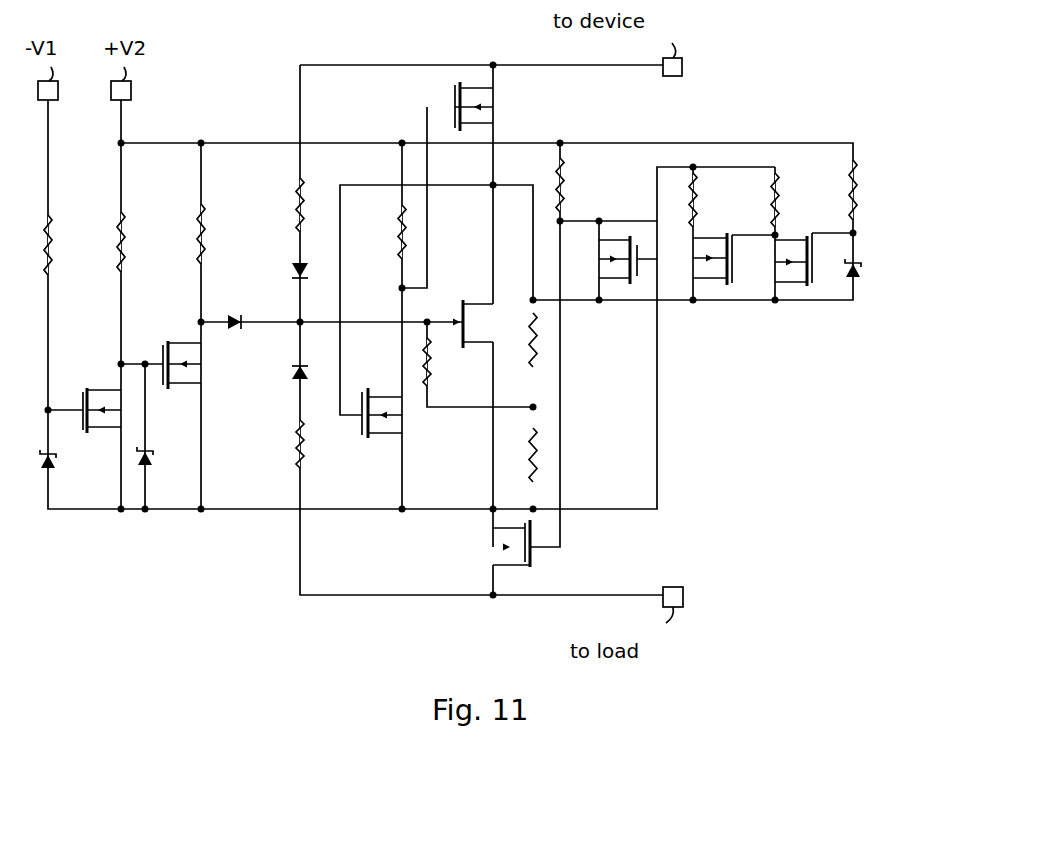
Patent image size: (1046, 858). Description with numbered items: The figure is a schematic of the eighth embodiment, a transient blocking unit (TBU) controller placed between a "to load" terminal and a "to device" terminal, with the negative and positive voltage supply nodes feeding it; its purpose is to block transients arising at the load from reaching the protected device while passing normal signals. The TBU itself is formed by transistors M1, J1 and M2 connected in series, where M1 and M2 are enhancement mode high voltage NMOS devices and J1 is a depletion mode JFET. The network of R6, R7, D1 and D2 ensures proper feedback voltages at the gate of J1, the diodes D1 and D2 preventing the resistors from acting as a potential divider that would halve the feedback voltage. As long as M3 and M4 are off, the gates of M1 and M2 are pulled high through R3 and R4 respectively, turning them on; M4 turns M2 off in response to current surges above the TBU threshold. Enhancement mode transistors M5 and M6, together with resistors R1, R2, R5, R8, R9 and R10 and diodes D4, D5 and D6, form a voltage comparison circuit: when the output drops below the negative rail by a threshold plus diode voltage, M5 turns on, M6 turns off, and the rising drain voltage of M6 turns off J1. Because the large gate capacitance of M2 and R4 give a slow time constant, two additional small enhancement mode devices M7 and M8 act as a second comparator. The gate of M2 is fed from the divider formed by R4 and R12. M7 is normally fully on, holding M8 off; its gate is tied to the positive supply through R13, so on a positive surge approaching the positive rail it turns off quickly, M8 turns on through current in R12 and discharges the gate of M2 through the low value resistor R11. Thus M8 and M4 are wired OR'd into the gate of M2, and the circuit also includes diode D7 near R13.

The resistor R1 is at (528, 347).
The resistor R2 is at (528, 467).
The resistor R3 is at (396, 239).
The resistor R4 is at (557, 192).
The resistor R5 is at (431, 364).
The resistor R6 is at (303, 196).
The resistor R7 is at (293, 445).
The resistor R8 is at (55, 236).
The resistor R9 is at (127, 233).
The resistor R10 is at (206, 230).
The resistor R11 is at (698, 194).
The resistor R12 is at (781, 201).
The resistor R13 is at (858, 190).
The diode D1 is at (290, 271).
The diode D2 is at (292, 371).
The diode D4 is at (53, 466).
The diode D5 is at (150, 463).
The diode D6 is at (238, 314).
The zener diode D7 is at (862, 277).
The HV NMOS transistor M1 is at (455, 85).
The NMOS transistor M2 is at (538, 568).
The transistor M3 is at (362, 439).
The transistor M4 is at (631, 237).
The enhancement mode NMOS transistor M5 is at (87, 387).
The enhancement mode NMOS transistor M6 is at (168, 340).
The enhancement mode transistor M7 is at (808, 238).
The enhancement mode transistor M8 is at (727, 238).
The JFET J1 is at (461, 302).